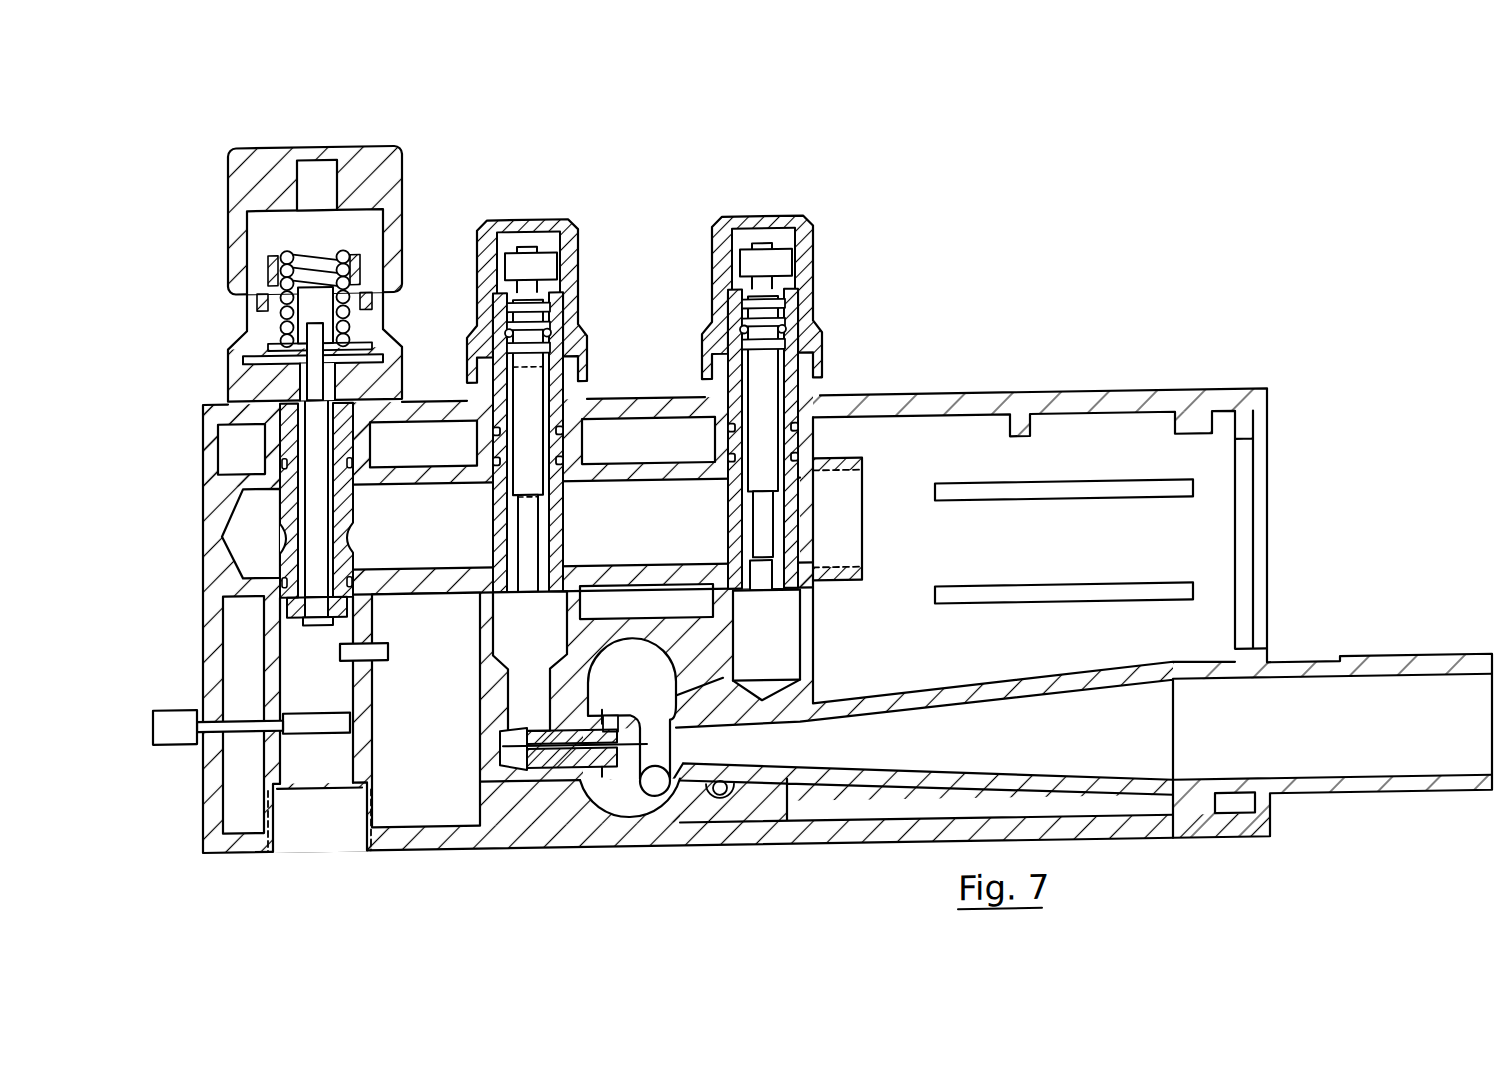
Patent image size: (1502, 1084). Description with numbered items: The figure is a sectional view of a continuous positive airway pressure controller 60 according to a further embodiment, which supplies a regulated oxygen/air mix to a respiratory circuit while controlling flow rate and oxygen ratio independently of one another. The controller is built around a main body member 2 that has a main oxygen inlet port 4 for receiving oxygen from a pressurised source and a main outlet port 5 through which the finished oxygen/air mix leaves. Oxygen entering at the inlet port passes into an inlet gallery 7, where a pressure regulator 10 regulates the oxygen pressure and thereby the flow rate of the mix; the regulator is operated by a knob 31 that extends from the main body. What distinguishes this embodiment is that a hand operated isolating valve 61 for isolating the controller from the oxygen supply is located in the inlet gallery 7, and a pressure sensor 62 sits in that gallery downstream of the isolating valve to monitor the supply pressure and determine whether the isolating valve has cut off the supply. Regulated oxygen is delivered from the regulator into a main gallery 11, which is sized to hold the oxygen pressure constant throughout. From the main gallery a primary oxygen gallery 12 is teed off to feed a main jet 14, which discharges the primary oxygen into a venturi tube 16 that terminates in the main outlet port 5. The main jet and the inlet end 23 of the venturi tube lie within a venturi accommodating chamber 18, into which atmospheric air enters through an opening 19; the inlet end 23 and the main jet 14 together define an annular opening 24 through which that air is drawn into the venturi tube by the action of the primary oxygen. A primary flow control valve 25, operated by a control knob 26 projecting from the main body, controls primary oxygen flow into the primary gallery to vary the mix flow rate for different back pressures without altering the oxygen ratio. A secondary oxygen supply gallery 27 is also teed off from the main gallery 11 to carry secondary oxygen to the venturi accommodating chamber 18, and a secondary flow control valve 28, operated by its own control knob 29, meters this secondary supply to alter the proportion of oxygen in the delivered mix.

The main body member 2 is at (1218, 404).
The main oxygen inlet port 4 is at (320, 842).
The main outlet port 5 is at (1287, 762).
The inlet gallery 7 is at (302, 687).
The pressure regulator 10 is at (288, 439).
The main gallery 11 is at (418, 508).
The primary oxygen gallery 12 is at (520, 627).
The main jet 14 is at (627, 782).
The venturi tube 16 is at (727, 751).
The venturi accommodating chamber 18 is at (625, 777).
The opening 19 is at (640, 770).
The inlet end 23 is at (663, 714).
The annular opening 24 is at (658, 749).
The primary flow control valve 25 is at (567, 509).
The control knob 26 is at (572, 274).
The secondary oxygen supply gallery 27 is at (765, 641).
The secondary flow control valve 28 is at (800, 511).
The control knob 29 is at (803, 269).
The knob 31 is at (385, 188).
The continuous positive airway pressure controller 60 is at (1008, 323).
The hand operated isolating valve 61 is at (320, 729).
The pressure sensor 62 is at (382, 661).